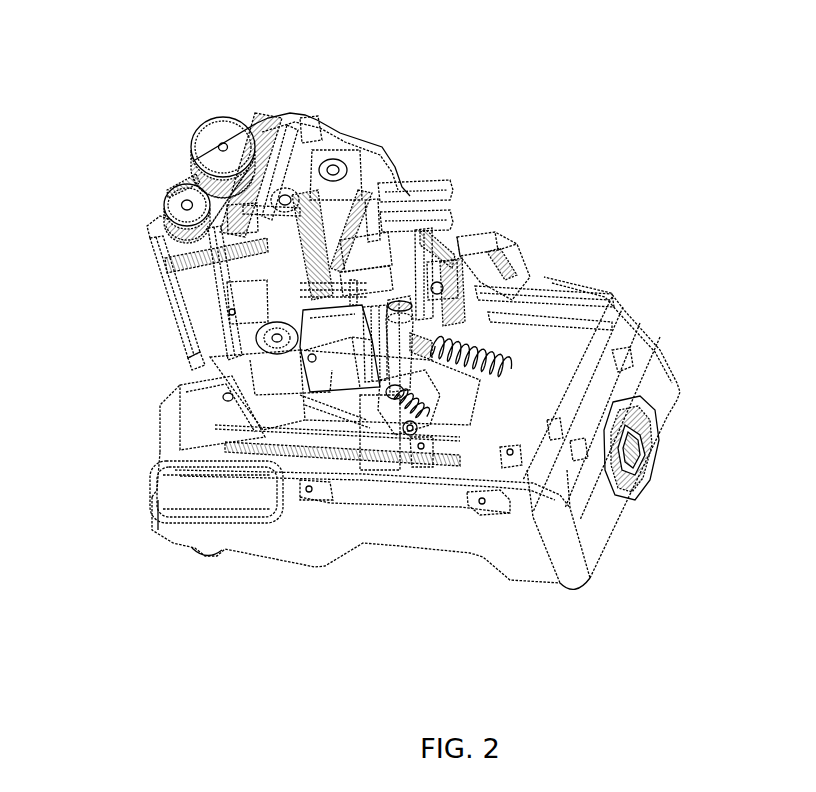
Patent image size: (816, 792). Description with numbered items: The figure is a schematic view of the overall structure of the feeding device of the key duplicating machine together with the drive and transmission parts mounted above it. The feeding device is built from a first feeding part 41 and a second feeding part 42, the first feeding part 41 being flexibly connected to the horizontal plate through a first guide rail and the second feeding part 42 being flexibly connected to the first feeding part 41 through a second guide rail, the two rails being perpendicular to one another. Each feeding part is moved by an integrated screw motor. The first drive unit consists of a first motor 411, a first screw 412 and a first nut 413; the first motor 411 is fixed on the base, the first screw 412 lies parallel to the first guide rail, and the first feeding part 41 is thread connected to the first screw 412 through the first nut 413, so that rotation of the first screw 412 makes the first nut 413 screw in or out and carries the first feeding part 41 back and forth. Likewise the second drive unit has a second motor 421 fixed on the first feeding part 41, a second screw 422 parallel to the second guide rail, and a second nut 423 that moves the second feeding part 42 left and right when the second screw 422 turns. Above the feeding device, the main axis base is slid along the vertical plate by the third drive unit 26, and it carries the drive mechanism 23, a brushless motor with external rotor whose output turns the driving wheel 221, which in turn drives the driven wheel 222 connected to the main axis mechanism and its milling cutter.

The third drive unit 26 is at (316, 167).
The driving wheel 221 is at (240, 137).
The driven wheel 222 is at (173, 212).
The drive mechanism 23 is at (270, 232).
The first motor 411 is at (330, 318).
The first nut 413 is at (405, 323).
The first screw 412 is at (450, 330).
The second motor 421 is at (480, 267).
The second screw 422 is at (490, 303).
The second nut 423 is at (400, 418).
The first feeding part 41 is at (520, 381).
The second feeding part 42 is at (490, 423).